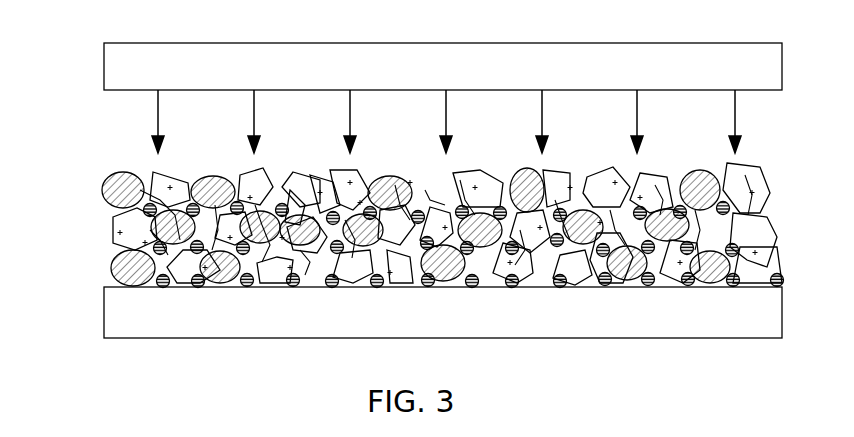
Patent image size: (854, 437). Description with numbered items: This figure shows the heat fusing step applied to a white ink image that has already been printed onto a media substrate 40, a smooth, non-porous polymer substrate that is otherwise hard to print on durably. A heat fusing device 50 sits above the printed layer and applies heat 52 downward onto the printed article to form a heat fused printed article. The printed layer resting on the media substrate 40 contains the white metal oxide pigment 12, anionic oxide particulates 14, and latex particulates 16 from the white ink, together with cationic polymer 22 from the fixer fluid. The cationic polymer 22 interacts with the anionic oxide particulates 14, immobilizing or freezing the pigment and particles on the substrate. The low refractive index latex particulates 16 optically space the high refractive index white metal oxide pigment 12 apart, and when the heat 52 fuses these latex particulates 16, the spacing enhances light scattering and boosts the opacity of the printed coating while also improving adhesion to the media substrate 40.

The white metal oxide pigment 12 is at (127, 230).
The anionic oxide particulates 14 is at (143, 248).
The latex particulates 16 is at (120, 193).
The cationic polymer 22 is at (147, 201).
The media substrate 40 is at (430, 322).
The heat fusing device 50 is at (431, 76).
The heat 52 is at (158, 110).